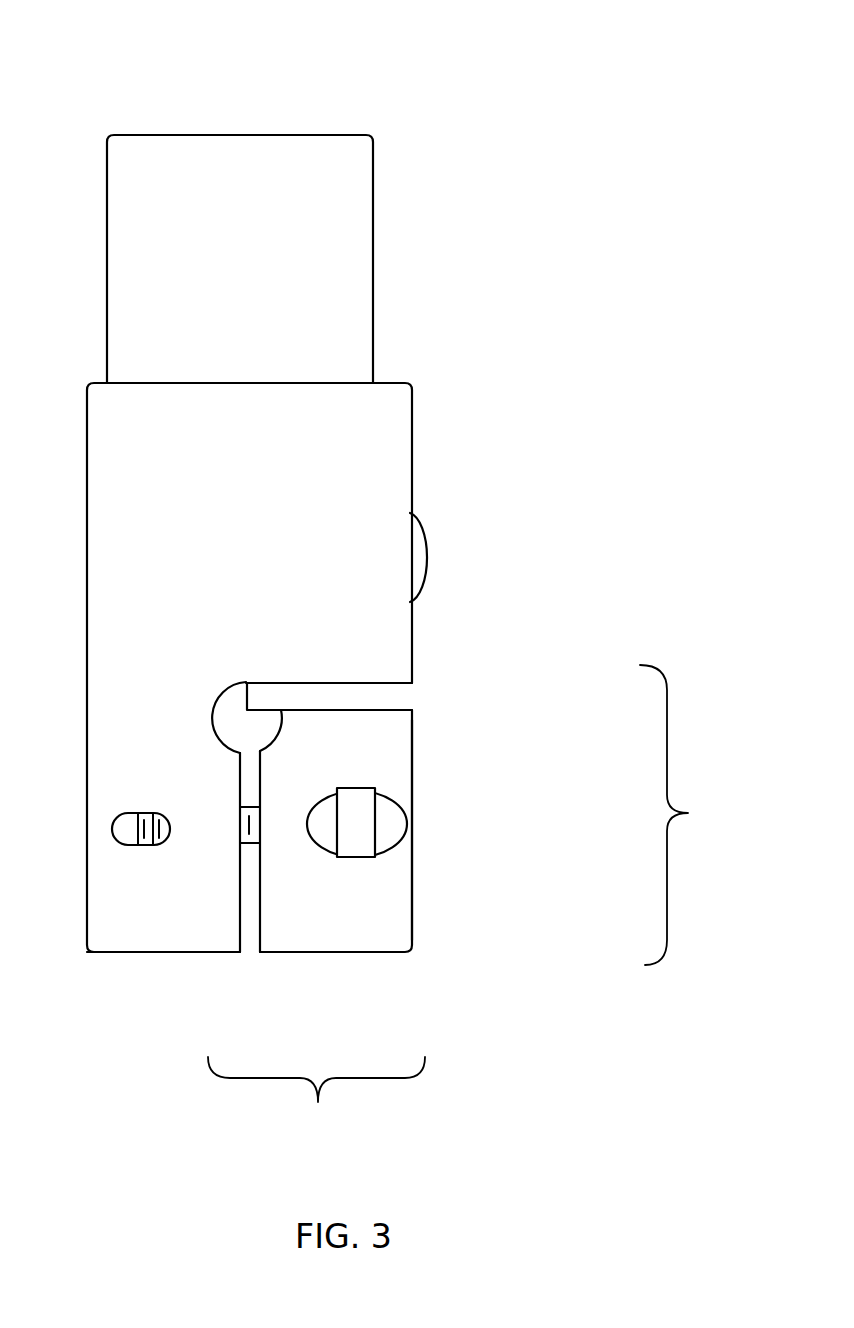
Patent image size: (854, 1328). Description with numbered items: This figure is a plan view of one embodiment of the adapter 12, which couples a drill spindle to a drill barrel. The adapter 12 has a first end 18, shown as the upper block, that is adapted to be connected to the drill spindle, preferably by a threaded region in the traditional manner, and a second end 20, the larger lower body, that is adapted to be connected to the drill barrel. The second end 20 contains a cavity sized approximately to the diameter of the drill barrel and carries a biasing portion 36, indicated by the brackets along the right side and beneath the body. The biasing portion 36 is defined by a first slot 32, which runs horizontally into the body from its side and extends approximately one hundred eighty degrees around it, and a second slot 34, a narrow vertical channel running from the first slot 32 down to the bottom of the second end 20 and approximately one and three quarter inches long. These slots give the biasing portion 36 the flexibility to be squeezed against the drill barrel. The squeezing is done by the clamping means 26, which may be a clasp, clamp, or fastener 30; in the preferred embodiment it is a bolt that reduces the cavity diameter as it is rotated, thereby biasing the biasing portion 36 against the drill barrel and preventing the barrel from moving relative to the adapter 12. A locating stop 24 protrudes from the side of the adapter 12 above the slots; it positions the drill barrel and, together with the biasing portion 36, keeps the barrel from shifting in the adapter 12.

The adapter 12 is at (370, 520).
The first end 18 is at (310, 133).
The second end 20 is at (370, 953).
The locating stop 24 is at (430, 553).
The clamping means 26 is at (438, 843).
The fastener 30 is at (378, 803).
The first slot 32 is at (397, 697).
The second slot 34 is at (250, 913).
The biasing portion 36 is at (472, 907).